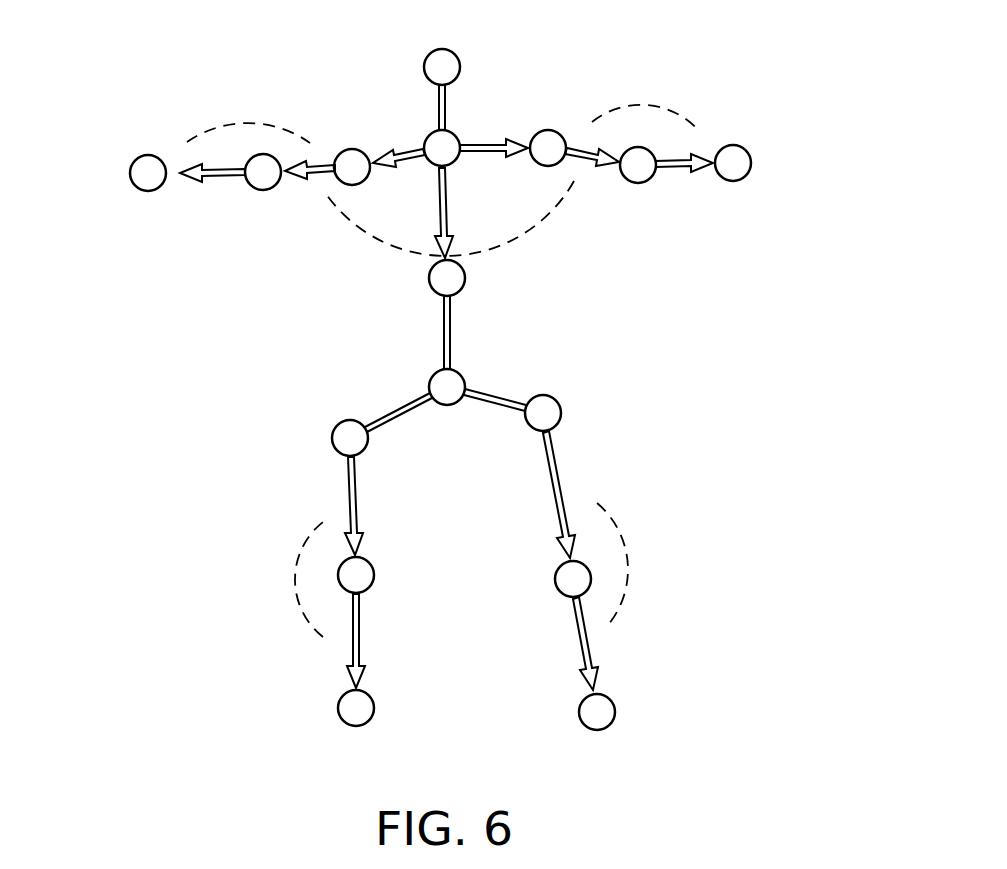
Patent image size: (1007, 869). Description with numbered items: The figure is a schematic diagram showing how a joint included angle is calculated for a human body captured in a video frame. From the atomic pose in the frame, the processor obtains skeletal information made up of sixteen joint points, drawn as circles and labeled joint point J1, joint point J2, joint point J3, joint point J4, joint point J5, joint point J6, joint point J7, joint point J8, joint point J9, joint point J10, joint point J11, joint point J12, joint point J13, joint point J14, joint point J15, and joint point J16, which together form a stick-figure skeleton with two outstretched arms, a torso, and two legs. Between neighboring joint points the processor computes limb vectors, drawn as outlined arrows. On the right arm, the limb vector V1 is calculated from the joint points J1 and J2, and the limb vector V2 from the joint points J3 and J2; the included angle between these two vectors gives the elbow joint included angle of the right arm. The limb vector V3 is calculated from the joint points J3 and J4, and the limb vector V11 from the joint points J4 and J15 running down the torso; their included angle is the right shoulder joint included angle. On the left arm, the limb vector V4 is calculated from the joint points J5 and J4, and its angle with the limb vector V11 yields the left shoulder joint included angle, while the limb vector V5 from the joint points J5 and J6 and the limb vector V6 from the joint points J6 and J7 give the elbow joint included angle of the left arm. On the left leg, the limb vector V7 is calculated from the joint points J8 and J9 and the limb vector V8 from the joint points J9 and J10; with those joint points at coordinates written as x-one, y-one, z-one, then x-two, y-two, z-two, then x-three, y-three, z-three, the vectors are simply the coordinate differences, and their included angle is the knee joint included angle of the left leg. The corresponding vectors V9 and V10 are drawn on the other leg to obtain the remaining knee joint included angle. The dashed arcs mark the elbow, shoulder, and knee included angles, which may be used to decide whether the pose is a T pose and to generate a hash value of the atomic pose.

The joint point J1 is at (148, 155).
The joint point J2 is at (263, 192).
The joint point J3 is at (353, 150).
The joint point J4 is at (455, 133).
The joint point J5 is at (557, 130).
The joint point J6 is at (640, 183).
The joint point J7 is at (733, 182).
The joint point J8 is at (345, 422).
The joint point J9 is at (368, 562).
The joint point J10 is at (373, 712).
The joint point J11 is at (563, 413).
The joint point J12 is at (555, 583).
The joint point J13 is at (617, 710).
The joint point J14 is at (455, 52).
The joint point J15 is at (466, 284).
The joint point J16 is at (462, 374).
The limb vector V1 is at (218, 178).
The limb vector V2 is at (323, 163).
The limb vector V3 is at (402, 150).
The limb vector V4 is at (494, 144).
The limb vector V5 is at (592, 154).
The limb vector V6 is at (678, 172).
The limb vector V7 is at (348, 487).
The limb vector V8 is at (352, 645).
The vector V9 is at (565, 493).
The vector V10 is at (593, 647).
The limb vector V11 is at (447, 194).